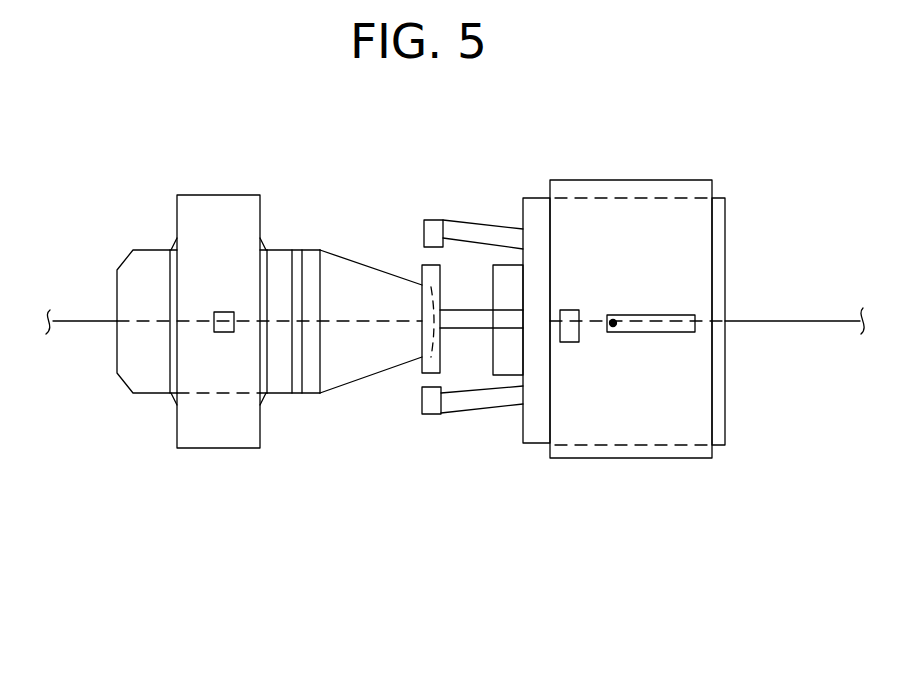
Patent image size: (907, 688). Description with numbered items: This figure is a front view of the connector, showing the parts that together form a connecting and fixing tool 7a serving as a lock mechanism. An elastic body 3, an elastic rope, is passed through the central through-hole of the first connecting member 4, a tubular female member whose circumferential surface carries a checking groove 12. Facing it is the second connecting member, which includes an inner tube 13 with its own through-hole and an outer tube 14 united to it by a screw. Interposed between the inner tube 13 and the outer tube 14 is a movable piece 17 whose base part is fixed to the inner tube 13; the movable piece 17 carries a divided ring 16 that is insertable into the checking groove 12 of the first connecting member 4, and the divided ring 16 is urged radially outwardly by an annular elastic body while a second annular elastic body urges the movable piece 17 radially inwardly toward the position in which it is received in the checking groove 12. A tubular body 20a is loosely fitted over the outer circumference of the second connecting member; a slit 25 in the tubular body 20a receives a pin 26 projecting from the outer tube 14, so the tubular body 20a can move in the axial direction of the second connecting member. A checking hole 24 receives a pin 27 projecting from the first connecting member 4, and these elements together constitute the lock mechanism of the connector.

The elastic body 3 is at (805, 320).
The first connecting member 4 is at (350, 370).
The assembly 7a is at (489, 563).
The checking groove 12 is at (308, 387).
The inner tube 13 is at (514, 280).
The outer tube 14 is at (537, 198).
The divided ring 16 is at (420, 373).
The movable piece 17 is at (485, 403).
The tubular body 20a is at (697, 460).
The checking hole 24 is at (567, 342).
The slit 25 is at (653, 332).
The pin 26 is at (613, 327).
The pin 27 is at (224, 332).